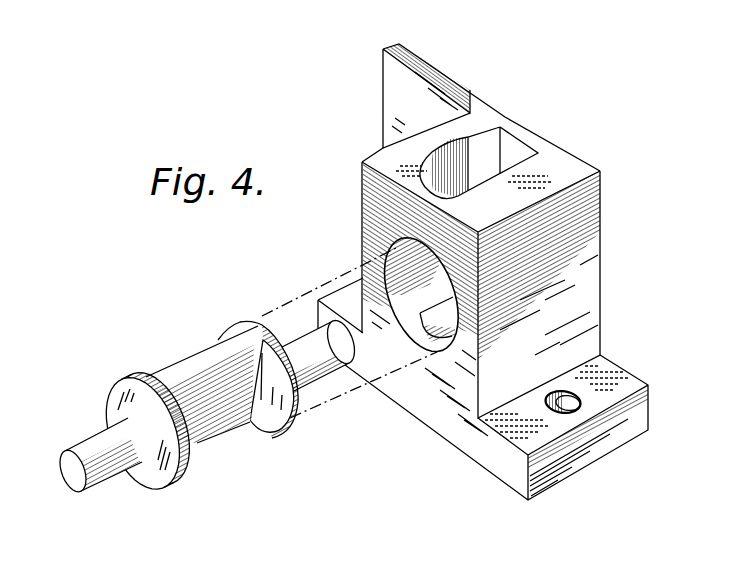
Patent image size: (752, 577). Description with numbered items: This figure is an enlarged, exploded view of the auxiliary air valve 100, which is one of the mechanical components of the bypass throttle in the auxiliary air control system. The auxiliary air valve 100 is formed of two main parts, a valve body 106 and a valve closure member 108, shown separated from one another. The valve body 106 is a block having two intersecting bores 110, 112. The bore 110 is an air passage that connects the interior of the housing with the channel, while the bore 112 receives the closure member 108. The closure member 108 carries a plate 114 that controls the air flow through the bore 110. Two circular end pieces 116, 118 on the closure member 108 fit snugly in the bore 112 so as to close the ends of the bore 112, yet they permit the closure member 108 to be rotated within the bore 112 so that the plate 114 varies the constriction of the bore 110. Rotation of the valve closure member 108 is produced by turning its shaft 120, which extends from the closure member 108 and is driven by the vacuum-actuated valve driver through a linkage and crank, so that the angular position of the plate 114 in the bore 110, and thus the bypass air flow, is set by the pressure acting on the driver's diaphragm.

The auxiliary air valve 100 is at (354, 158).
The valve body 106 is at (600, 171).
The valve closure member 108 is at (244, 393).
The bore 110 is at (528, 143).
The bore 112 is at (402, 316).
The plate 114 is at (202, 352).
The end piece 116 is at (164, 487).
The end piece 118 is at (280, 433).
The shaft 120 is at (100, 487).